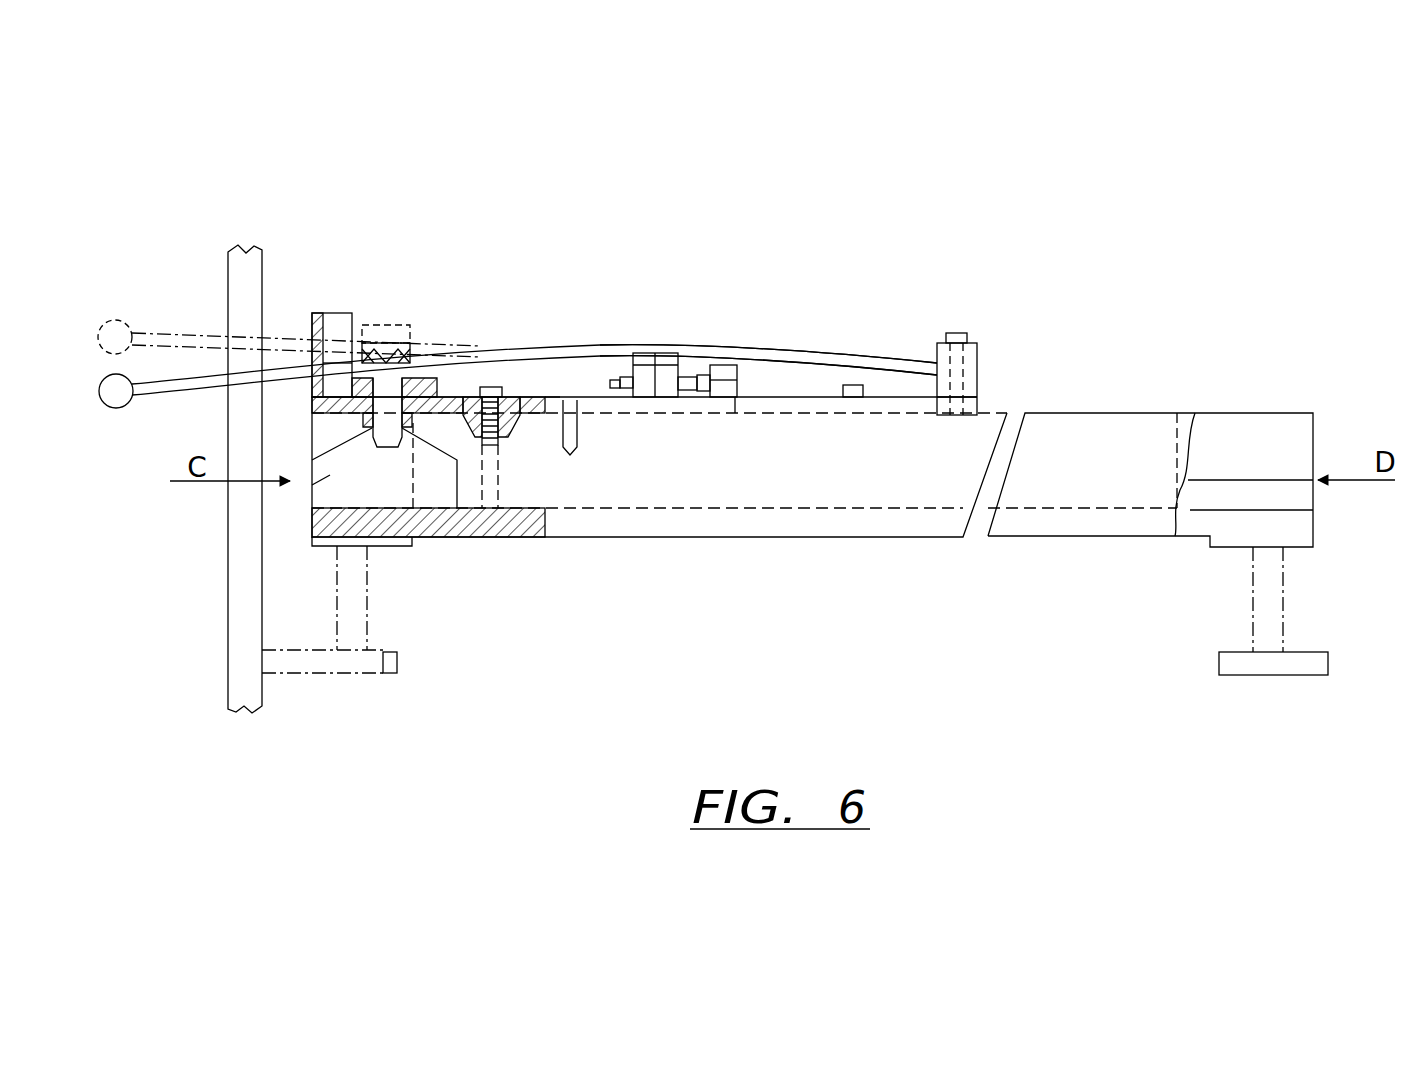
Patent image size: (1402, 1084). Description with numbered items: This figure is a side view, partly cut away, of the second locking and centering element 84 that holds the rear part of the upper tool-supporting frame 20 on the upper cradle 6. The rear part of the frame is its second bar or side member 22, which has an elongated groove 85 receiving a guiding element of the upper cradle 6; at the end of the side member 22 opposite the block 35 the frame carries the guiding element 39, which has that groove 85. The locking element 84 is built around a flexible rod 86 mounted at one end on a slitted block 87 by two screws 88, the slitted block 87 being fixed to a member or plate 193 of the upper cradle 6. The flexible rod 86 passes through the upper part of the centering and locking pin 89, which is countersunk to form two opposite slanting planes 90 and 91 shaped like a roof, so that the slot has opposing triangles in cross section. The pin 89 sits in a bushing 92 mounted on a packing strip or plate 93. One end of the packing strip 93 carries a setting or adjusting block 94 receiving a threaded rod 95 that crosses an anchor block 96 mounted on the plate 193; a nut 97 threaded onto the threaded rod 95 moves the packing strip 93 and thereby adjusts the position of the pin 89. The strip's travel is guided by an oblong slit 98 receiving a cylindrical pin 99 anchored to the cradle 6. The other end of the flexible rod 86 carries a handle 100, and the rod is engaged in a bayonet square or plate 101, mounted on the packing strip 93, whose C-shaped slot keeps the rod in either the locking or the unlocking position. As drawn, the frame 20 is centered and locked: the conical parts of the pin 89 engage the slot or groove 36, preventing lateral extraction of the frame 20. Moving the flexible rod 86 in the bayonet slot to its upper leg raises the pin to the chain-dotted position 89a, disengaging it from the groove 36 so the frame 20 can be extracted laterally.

The upper cradle 6 is at (930, 540).
The upper tool-supporting frame 20 is at (967, 457).
The second bar or side member 22 is at (402, 547).
The block 35 is at (353, 470).
The slot or groove 36 is at (368, 447).
The guiding element 39 is at (1256, 478).
The second locking and centering element 84 is at (518, 332).
The elongated groove 85 is at (623, 507).
The flexible rod 86 is at (823, 360).
The slitted block 87 is at (977, 350).
The screws 88 is at (962, 332).
The centering and locking pin 89 is at (352, 403).
The chain-dotted position of centering and locking pin 89a is at (383, 325).
The slanting plane 90 is at (405, 363).
The slanting plane 91 is at (410, 364).
The bushing 92 is at (470, 395).
The packing strip or plate 93 is at (440, 395).
The setting or adjusting block 94 is at (668, 372).
The threaded rod 95 is at (618, 382).
The anchor block 96 is at (741, 353).
The nut 97 is at (707, 383).
The oblong slit 98 is at (585, 407).
The cylindrical pin 99 is at (555, 433).
The handle 100 is at (115, 395).
The bayonet square or plate 101 is at (312, 327).
The member or plate 193 is at (820, 400).